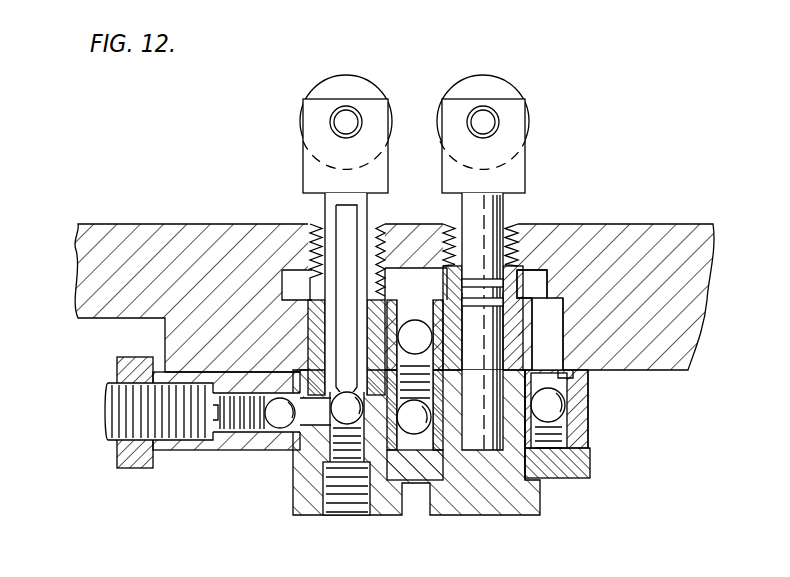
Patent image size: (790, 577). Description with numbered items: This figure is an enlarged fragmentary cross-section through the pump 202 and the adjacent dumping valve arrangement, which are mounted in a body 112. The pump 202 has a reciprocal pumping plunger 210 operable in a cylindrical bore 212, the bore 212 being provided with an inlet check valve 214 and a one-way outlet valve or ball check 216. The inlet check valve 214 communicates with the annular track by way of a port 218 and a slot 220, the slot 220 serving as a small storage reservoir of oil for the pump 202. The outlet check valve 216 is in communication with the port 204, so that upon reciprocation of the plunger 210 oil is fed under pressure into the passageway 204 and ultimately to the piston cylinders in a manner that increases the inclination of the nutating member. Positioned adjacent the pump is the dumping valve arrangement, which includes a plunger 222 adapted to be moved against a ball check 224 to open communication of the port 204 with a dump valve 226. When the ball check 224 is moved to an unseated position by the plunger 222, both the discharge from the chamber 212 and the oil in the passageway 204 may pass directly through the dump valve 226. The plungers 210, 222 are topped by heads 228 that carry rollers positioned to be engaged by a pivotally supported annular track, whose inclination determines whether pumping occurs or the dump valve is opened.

The block 112 is at (668, 230).
The pump 202 is at (594, 425).
The port 204 is at (415, 325).
The pumping plunger 210 is at (495, 248).
The cylindrical bore 212 is at (590, 468).
The inlet check valve 214 is at (548, 405).
The outlet check valve 216 is at (485, 430).
The port 218 is at (553, 312).
The slot 220 is at (550, 268).
The plunger 222 is at (345, 218).
The ball check 224 is at (345, 398).
The dump valve 226 is at (281, 420).
The knob 228 is at (360, 82).